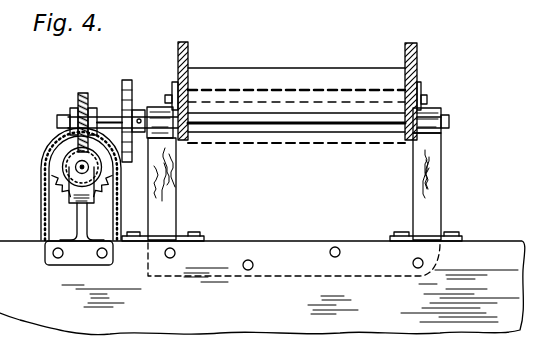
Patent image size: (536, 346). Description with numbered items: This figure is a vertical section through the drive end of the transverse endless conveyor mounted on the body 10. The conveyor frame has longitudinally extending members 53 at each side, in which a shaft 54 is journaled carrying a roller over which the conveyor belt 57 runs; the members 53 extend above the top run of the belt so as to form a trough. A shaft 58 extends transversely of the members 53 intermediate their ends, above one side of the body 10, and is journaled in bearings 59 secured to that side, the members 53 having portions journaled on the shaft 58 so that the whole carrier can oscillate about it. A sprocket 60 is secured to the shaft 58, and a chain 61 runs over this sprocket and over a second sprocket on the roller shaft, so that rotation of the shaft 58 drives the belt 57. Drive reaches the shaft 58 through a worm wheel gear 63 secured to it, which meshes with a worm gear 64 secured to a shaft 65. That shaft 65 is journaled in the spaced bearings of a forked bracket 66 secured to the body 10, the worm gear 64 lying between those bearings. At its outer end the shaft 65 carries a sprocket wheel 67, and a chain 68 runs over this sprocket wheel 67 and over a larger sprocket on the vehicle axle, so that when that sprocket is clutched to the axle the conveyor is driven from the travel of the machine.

The body 10 is at (300, 258).
The longitudinally extending members 53 is at (190, 45).
The shaft 54 is at (422, 103).
The conveyor belt 57 is at (308, 86).
The shaft 58 is at (57, 120).
The bearings 59 is at (166, 181).
The sprocket 60 is at (127, 99).
The chain 61 is at (130, 81).
The worm wheel gear 63 is at (81, 92).
The worm gear 64 is at (68, 158).
The shaft 65 is at (76, 169).
The forked bracket 66 is at (79, 221).
The sprocket wheel 67 is at (107, 168).
The chain 68 is at (42, 198).